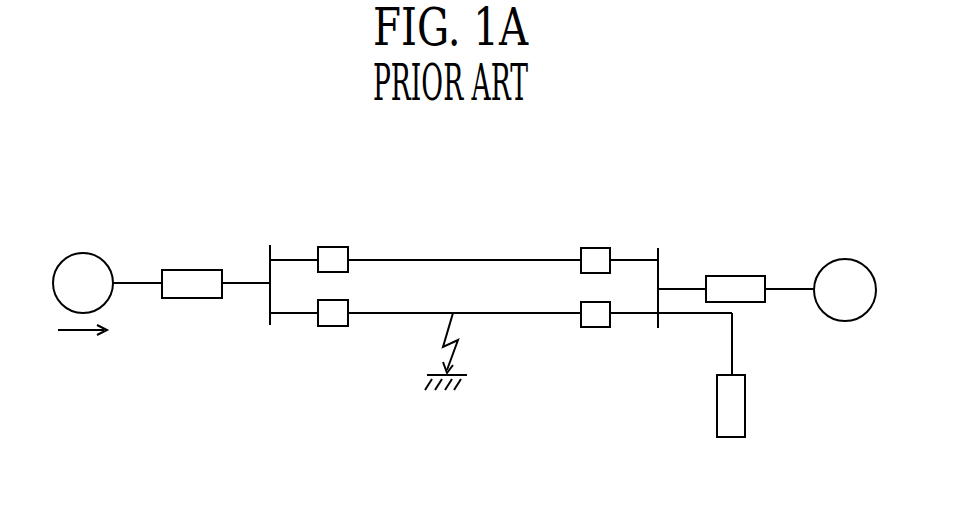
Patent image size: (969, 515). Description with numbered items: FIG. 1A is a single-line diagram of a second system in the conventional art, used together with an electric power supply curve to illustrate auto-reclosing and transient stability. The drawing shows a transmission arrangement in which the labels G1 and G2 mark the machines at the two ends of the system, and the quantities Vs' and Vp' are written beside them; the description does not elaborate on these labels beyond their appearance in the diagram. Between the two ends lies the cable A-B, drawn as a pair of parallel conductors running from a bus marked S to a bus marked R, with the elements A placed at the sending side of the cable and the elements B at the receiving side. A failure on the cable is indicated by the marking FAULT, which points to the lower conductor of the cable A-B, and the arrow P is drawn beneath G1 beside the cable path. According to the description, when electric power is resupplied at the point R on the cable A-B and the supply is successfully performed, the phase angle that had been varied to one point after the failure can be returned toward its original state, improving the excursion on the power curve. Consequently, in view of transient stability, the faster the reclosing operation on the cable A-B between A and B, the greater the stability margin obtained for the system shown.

The sending-end generator G1 is at (65, 283).
The receiving-end generator G2 is at (845, 313).
The sending-end voltage source impedance Vs' is at (174, 258).
The receiving-end voltage source impedance Vp' is at (764, 265).
The sending-end bus S is at (270, 269).
The point R is at (658, 271).
The cable end A is at (333, 304).
The cable end B is at (595, 306).
The power flow direction P is at (82, 343).
The fault on transmission line FAULT is at (481, 351).